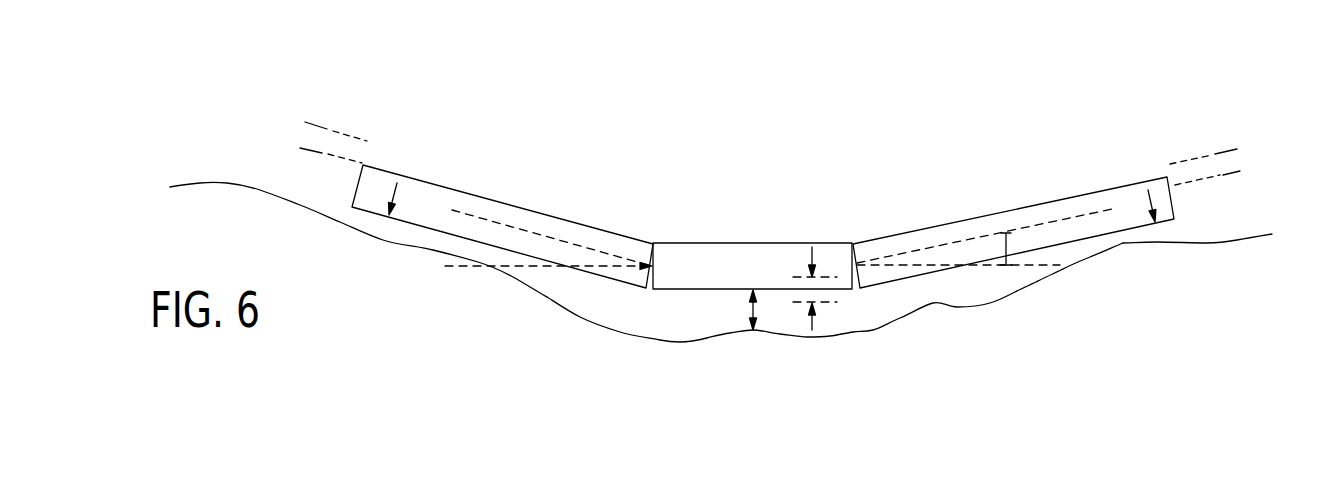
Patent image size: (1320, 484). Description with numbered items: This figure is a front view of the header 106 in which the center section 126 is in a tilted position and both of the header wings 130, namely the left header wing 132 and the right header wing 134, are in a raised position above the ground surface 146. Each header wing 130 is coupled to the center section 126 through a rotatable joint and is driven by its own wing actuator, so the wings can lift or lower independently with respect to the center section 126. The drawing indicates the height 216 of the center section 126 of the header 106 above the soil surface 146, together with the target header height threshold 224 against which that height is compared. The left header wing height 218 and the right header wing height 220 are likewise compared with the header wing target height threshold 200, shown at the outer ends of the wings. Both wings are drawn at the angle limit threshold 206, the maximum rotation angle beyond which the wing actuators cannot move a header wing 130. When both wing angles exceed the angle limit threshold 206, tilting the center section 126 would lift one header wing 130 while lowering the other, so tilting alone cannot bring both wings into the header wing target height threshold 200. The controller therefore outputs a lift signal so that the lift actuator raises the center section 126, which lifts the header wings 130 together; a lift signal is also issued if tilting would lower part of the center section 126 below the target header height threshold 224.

The header 106 is at (773, 136).
The center section 126 is at (753, 213).
The header wings 130 is at (763, 183).
The left header wing 132 is at (902, 218).
The right header wing 134 is at (453, 174).
The ground surface 146 is at (1040, 283).
The header wing target height threshold 200 is at (300, 187).
The angle limit threshold 206 is at (505, 268).
The height of the header 216 is at (748, 313).
The left header wing height 218 is at (1158, 247).
The right header wing height 220 is at (385, 242).
The target header height threshold 224 is at (814, 328).